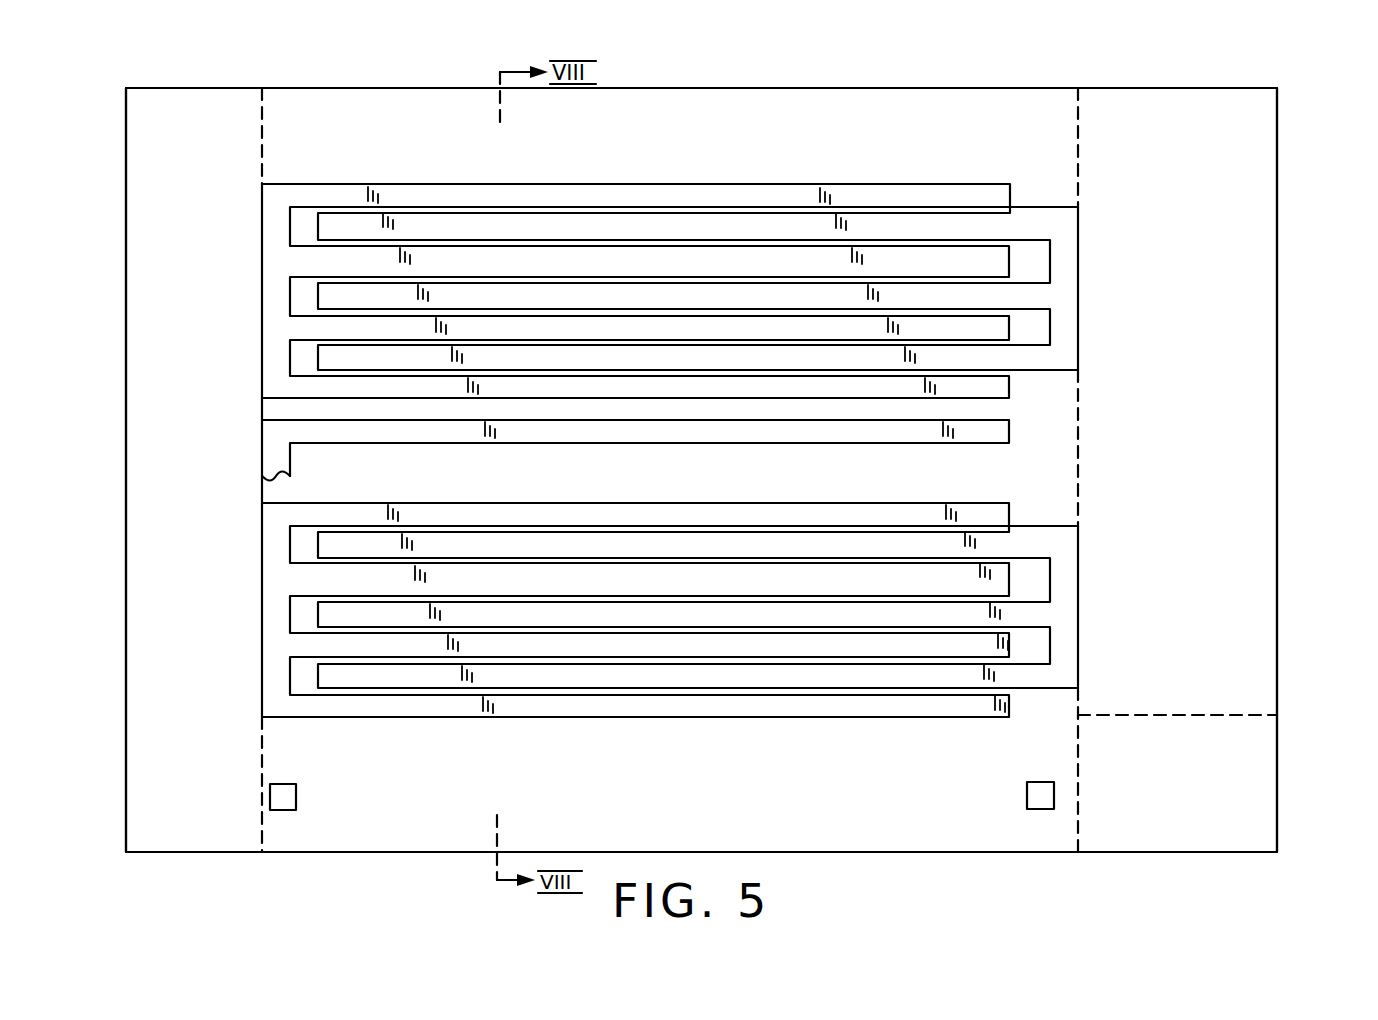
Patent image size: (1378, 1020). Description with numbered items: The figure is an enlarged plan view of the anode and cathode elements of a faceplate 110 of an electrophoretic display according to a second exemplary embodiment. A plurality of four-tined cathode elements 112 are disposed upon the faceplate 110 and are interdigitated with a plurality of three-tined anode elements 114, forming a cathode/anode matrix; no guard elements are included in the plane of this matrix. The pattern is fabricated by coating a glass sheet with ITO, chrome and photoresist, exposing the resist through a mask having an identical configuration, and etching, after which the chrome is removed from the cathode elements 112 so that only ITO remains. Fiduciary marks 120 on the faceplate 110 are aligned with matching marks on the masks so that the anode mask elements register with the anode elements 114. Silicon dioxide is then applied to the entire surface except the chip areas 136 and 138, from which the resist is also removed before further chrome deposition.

The faceplate 110 is at (100, 609).
The four-tined cathode elements 112 is at (270, 288).
The three-tined anode elements 114 is at (1060, 237).
The fiduciary marks 120 is at (290, 797).
The chip area 136 is at (157, 473).
The chip area 138 is at (1257, 640).